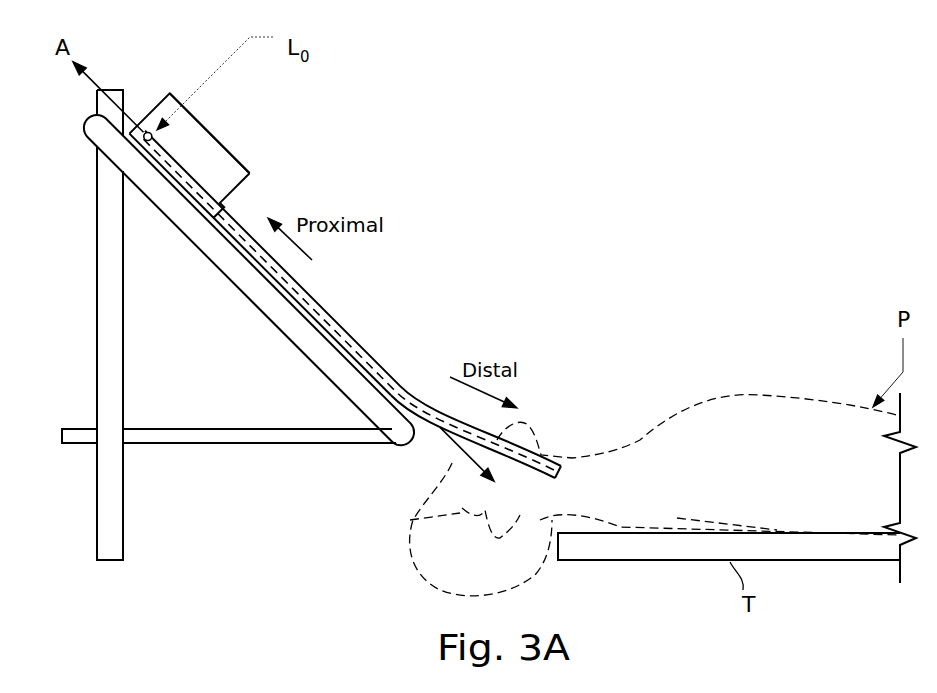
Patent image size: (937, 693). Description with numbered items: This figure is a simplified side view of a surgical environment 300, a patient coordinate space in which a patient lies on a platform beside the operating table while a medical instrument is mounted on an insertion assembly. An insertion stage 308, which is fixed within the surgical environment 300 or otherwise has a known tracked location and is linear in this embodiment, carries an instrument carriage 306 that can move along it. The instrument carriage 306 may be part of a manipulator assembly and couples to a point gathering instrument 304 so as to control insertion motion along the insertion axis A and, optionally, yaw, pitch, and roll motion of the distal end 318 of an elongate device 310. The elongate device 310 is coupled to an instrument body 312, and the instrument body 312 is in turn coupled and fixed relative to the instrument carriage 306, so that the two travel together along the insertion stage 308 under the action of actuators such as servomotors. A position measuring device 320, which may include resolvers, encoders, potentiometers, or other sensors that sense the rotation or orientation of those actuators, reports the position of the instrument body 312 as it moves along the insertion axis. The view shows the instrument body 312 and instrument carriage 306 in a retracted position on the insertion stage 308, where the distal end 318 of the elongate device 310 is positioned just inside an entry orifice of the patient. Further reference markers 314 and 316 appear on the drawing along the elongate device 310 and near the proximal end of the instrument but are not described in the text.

The surgical environment 300 is at (707, 161).
The point gathering instrument 304 is at (197, 133).
The instrument carriage 306 is at (196, 194).
The insertion stage 308 is at (243, 292).
The elongate device 310 is at (383, 362).
The instrument body 312 is at (237, 158).
The inner member 314 is at (322, 298).
The pivot point 316 is at (147, 130).
The distal end 318 is at (537, 476).
The position measuring device 320 is at (152, 160).